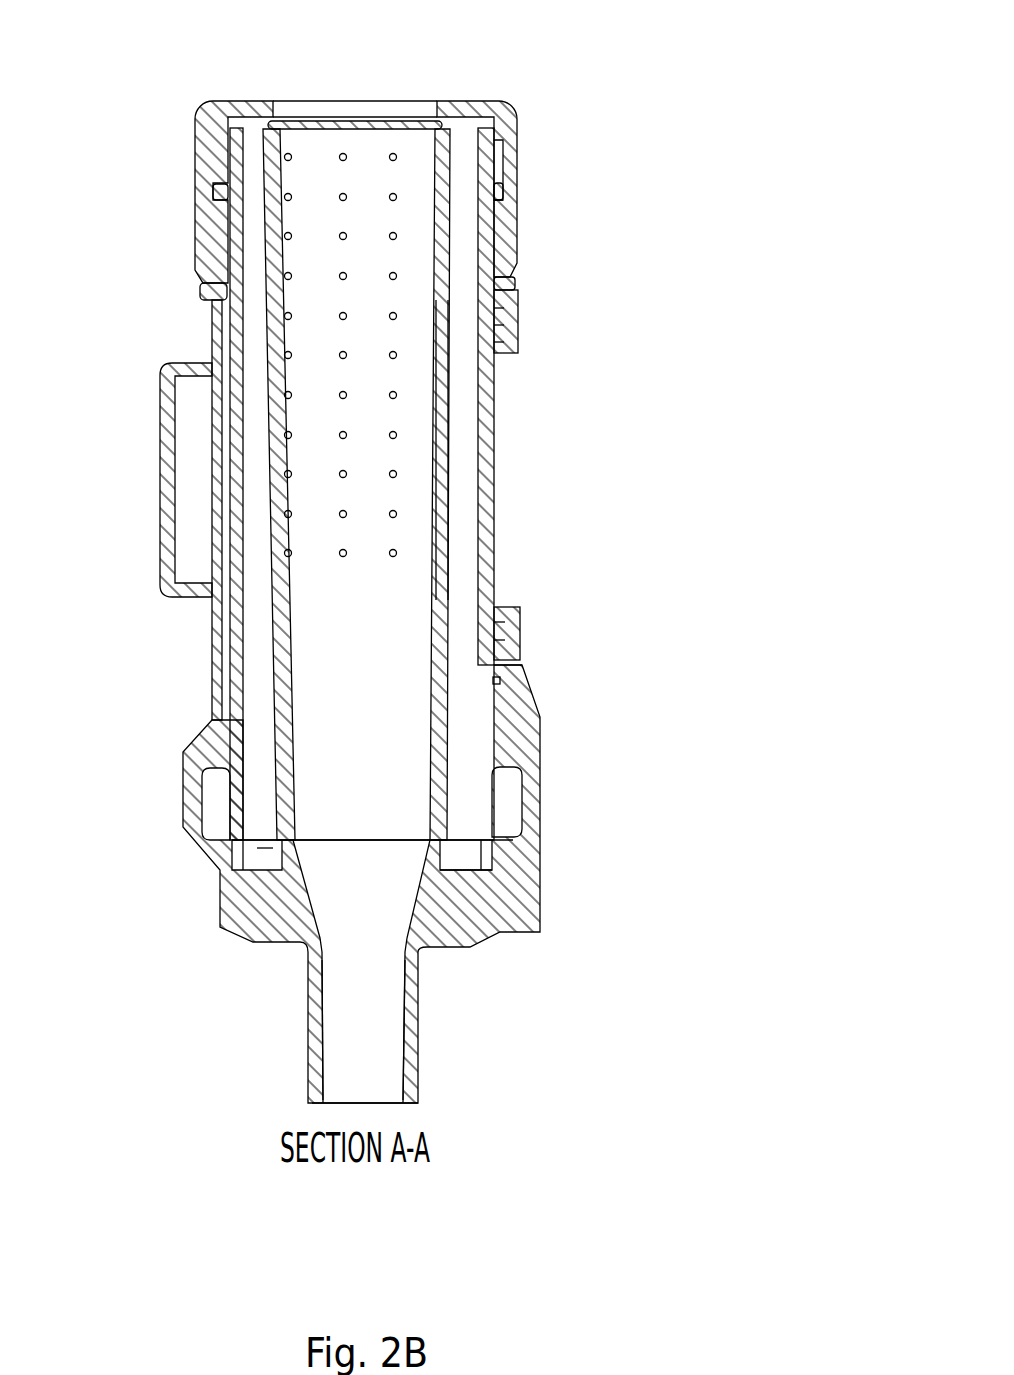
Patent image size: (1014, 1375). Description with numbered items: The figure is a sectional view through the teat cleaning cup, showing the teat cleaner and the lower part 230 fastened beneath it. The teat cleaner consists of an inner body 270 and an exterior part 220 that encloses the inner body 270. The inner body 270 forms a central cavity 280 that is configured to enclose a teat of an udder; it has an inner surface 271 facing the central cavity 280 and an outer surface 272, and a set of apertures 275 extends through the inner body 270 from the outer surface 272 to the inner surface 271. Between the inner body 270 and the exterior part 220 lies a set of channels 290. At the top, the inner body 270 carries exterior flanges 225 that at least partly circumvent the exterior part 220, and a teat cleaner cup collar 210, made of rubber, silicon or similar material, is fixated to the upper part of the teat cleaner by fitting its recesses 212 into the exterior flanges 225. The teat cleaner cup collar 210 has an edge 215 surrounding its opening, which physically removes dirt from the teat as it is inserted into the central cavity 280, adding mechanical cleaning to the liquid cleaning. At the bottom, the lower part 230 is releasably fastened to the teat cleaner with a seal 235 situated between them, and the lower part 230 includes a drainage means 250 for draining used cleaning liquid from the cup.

The central cavity 280 is at (352, 60).
The edge 215 is at (438, 120).
The recesses 212 is at (480, 186).
The exterior flanges 225 is at (210, 130).
The teat cleaner cup collar 210 is at (518, 240).
The exterior part 220 is at (505, 348).
The inner body 270 is at (442, 425).
The inner surface 271 is at (442, 468).
The outer surface 272 is at (445, 510).
The set of apertures 275 is at (398, 553).
The set of channels 290 is at (262, 697).
The seal 235 is at (485, 857).
The lower part 230 is at (503, 907).
The drainage means 250 is at (402, 1097).